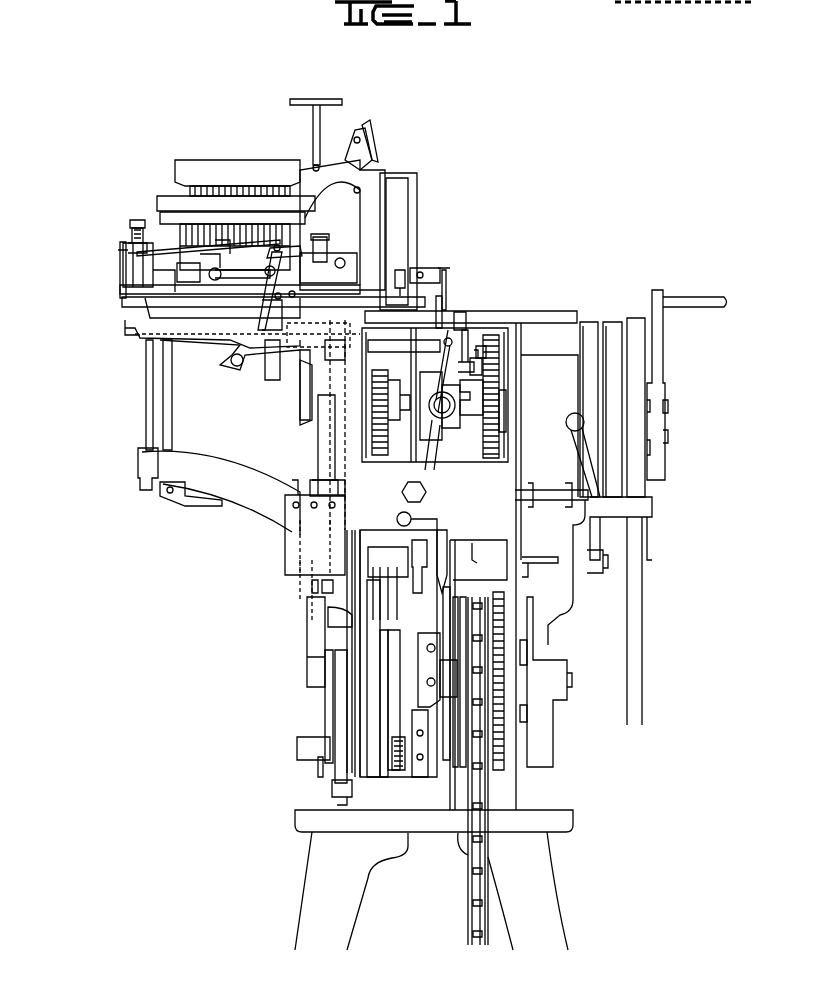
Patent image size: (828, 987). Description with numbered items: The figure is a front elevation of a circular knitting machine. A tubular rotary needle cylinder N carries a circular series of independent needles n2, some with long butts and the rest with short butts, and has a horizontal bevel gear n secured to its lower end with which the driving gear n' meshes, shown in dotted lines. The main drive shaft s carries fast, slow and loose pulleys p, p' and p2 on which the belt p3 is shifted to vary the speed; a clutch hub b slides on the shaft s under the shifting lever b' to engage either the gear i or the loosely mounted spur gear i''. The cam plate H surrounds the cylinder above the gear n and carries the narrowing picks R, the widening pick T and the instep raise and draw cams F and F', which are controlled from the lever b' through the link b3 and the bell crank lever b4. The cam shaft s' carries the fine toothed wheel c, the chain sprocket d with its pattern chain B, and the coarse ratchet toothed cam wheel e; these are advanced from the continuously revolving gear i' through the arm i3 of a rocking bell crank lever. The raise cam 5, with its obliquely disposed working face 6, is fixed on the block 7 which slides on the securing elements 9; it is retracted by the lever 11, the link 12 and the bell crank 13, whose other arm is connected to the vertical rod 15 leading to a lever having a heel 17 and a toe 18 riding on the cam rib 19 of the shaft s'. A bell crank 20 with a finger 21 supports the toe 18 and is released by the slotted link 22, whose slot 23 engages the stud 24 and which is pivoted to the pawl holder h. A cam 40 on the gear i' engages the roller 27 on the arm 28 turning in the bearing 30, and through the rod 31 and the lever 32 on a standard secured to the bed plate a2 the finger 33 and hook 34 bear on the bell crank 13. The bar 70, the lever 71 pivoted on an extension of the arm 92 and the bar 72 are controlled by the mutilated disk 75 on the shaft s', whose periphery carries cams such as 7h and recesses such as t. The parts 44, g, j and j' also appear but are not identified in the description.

The raise cam 5 is at (390, 920).
The working face 6 is at (446, 900).
The needle cylinder N is at (240, 186).
The needles n2 is at (208, 190).
The link 12 is at (258, 212).
The instep draw cam F' is at (226, 174).
The widening pick T is at (185, 230).
The narrowing picks R is at (300, 255).
The bell crank lever 13 is at (345, 290).
The securing elements 9 is at (128, 299).
The bed plate a2 is at (540, 312).
The cam plate H is at (130, 328).
The bevel gear n is at (230, 358).
The block 7 is at (128, 238).
The lever 11 is at (118, 250).
The instep raise cam F is at (117, 267).
The bar 70 is at (170, 385).
The arm 92 is at (148, 462).
The lever 71 is at (215, 455).
The bell crank lever b4 is at (220, 355).
The block 44 is at (275, 344).
The link b3 is at (280, 340).
The hook 34 is at (320, 355).
The spur gear i'' is at (286, 385).
The driving gear n' is at (282, 404).
The clutch member b is at (305, 437).
The shifting lever b' is at (355, 470).
The gear i is at (497, 396).
The cam 40 is at (492, 446).
The gear wheel i' is at (462, 346).
The rod 15 is at (440, 322).
The roller 27 is at (472, 332).
The arm 28 is at (487, 338).
The bearing 30 is at (447, 300).
The lever 32 is at (430, 268).
The rod 31 is at (445, 268).
The finger 33 is at (406, 278).
The pawl holder h is at (522, 560).
The link 22 is at (430, 520).
The fast pulley p is at (599, 369).
The slow pulley p' is at (624, 384).
The loose pulley p2 is at (655, 290).
The main drive shaft s is at (682, 421).
The belt p3 is at (644, 592).
The cam shaft s' is at (559, 682).
The pattern chain B is at (490, 850).
The fine toothed wheel c is at (500, 740).
The sprocket d is at (480, 722).
The ratchet toothed cam wheel e is at (470, 775).
The arm i3 is at (285, 505).
The bar 72 is at (310, 540).
The heel 17 is at (355, 505).
The stud 24 is at (445, 520).
The slot 23 is at (452, 525).
The bell crank 20 is at (368, 560).
The finger 21 is at (310, 590).
The toe 18 is at (307, 620).
The cam 7h is at (328, 635).
The bar g is at (325, 652).
The cam rib 19 is at (370, 660).
The recess t is at (388, 700).
The bar j is at (324, 703).
The mutilated disk 75 is at (392, 745).
The bar j' is at (337, 681).